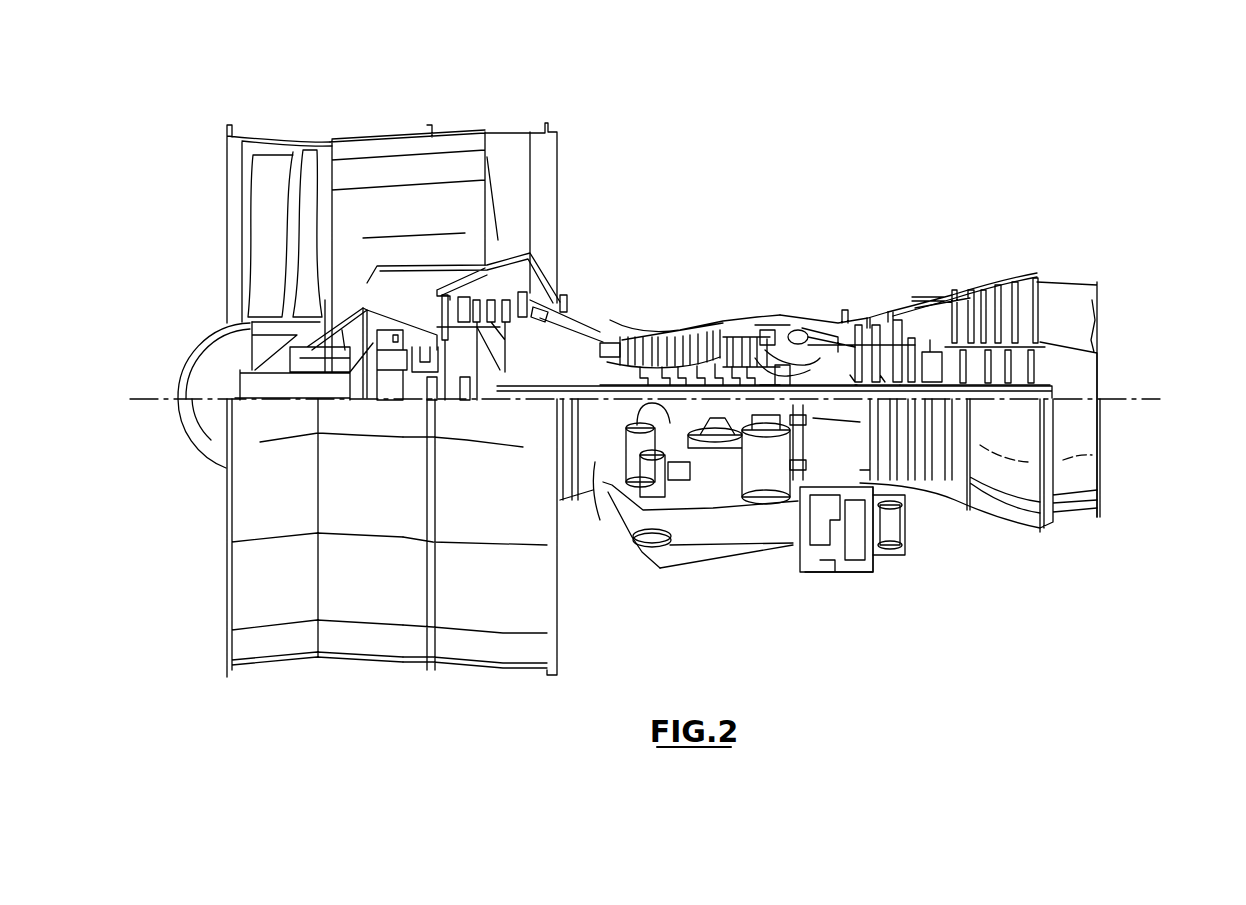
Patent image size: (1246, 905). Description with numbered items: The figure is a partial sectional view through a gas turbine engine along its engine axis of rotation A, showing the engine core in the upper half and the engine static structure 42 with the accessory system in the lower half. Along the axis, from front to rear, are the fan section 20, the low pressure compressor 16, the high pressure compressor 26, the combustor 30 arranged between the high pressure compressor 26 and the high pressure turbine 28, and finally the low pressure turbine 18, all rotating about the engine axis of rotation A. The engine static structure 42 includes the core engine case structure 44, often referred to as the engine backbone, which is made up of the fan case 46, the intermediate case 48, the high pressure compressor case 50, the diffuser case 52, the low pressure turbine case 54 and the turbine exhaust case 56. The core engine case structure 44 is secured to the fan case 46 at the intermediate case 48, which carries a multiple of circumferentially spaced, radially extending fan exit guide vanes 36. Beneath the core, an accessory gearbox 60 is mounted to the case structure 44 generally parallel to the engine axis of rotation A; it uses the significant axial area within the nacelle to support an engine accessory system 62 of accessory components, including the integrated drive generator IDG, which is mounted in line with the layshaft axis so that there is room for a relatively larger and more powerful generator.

The fan section 20 is at (378, 137).
The low pressure compressor 16 is at (610, 308).
The fan exit guide vanes 36 is at (515, 168).
The high pressure compressor 26 is at (610, 308).
The combustor 30 is at (750, 306).
The high pressure turbine 28 is at (893, 307).
The low pressure turbine 18 is at (950, 285).
The engine axis of rotation A is at (1150, 398).
The fan case 46 is at (338, 640).
The intermediate case 48 is at (505, 647).
The high pressure compressor case 50 is at (603, 452).
The diffuser case 52 is at (888, 553).
The low pressure turbine case 54 is at (920, 485).
The core engine case structure 44 is at (992, 547).
The turbine exhaust case 56 is at (1062, 530).
The engine static structure 42 is at (1147, 553).
The integrated drive generator IDG is at (863, 570).
The accessory gearbox 60 is at (770, 582).
The engine accessory system 62 is at (845, 600).